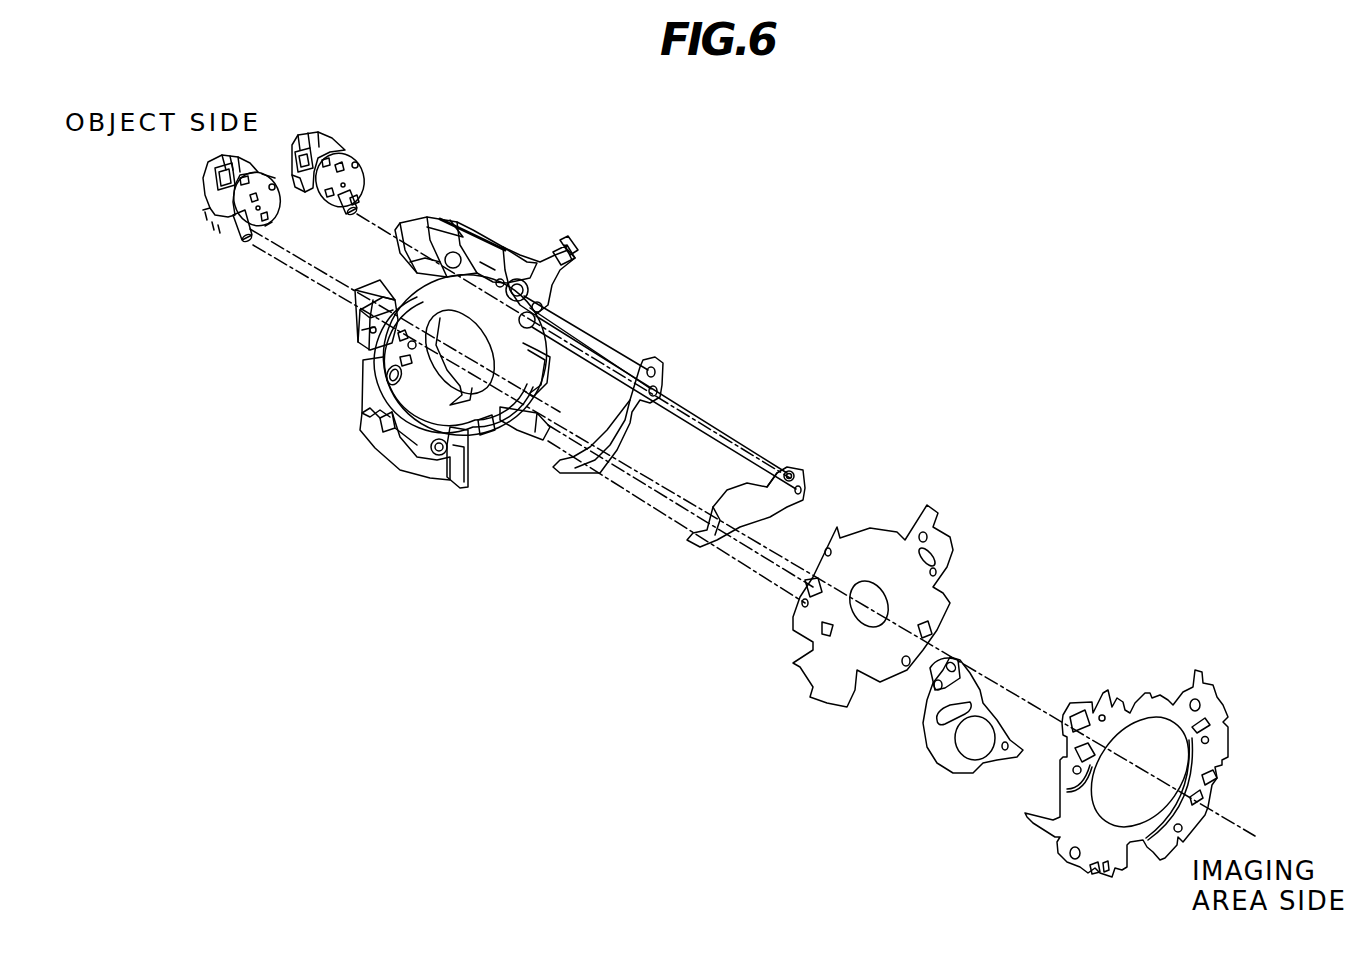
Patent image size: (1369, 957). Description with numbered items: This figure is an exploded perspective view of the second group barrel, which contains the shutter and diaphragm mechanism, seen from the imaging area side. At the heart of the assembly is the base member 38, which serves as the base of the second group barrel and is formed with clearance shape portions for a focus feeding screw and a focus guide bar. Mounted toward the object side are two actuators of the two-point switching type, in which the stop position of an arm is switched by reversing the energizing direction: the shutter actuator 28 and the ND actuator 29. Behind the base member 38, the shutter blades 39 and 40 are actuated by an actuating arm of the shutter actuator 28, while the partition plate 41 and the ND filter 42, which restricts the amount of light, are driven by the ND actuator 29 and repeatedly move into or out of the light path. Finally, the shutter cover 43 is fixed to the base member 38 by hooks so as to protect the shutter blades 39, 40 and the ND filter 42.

The shutter actuator 28 is at (352, 150).
The ND actuator 29 is at (208, 183).
The base member 38 is at (508, 258).
The shutter blade 39 is at (630, 375).
The shutter blade 40 is at (780, 470).
The partition plate 41 is at (880, 530).
The ND filter 42 is at (968, 680).
The shutter cover 43 is at (1203, 680).